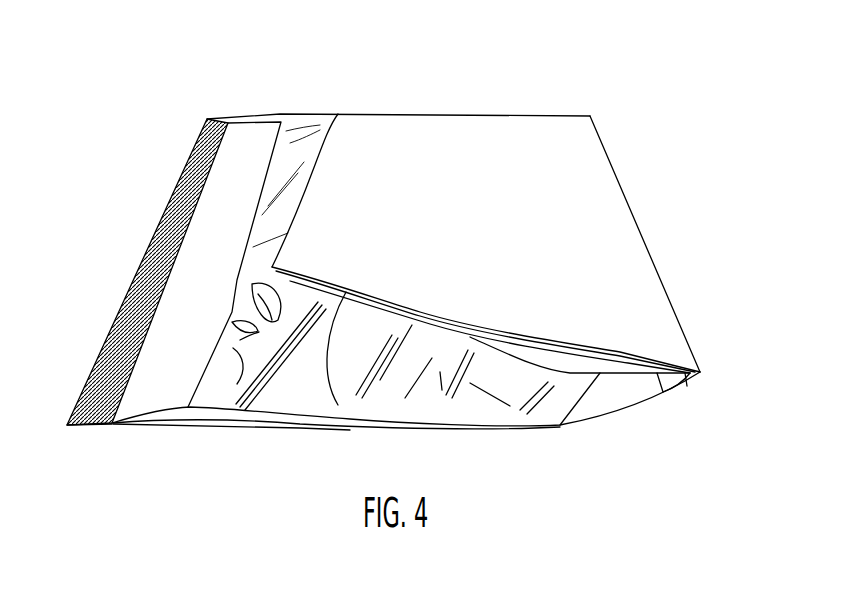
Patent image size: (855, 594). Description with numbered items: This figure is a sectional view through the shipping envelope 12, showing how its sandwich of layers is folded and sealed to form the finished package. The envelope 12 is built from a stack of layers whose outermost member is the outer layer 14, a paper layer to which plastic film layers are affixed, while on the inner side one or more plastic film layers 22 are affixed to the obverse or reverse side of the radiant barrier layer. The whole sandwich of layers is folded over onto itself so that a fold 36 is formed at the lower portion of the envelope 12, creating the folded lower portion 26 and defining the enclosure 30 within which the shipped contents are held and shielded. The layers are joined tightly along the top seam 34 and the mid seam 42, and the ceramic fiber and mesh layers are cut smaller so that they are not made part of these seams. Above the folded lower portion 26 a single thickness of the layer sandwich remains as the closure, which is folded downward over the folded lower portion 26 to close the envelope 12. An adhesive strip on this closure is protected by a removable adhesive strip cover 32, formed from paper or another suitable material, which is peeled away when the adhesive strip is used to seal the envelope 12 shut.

The envelope 12 is at (127, 121).
The outer layer 14 is at (457, 151).
The plastic film layers 22 is at (428, 378).
The folded lower portion 26 is at (626, 232).
The enclosure 30 is at (368, 332).
The adhesive strip cover 32 is at (241, 142).
The top seam 34 is at (120, 345).
The fold 36 is at (709, 376).
The mid seam 42 is at (335, 132).